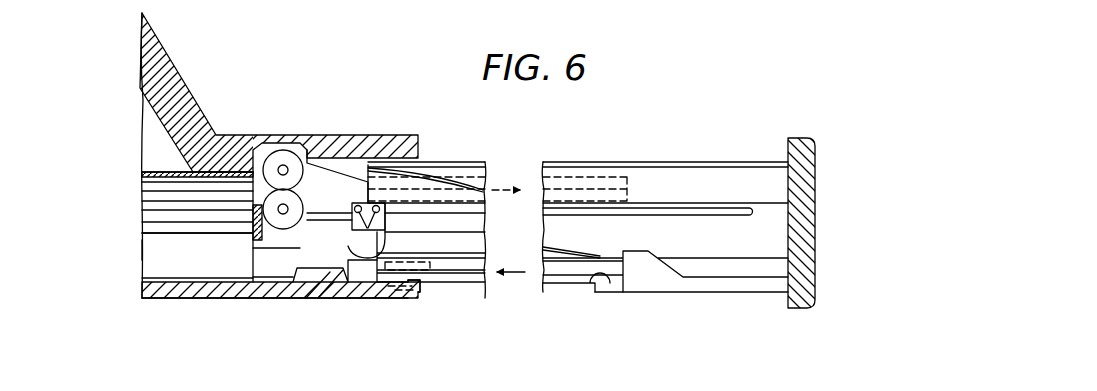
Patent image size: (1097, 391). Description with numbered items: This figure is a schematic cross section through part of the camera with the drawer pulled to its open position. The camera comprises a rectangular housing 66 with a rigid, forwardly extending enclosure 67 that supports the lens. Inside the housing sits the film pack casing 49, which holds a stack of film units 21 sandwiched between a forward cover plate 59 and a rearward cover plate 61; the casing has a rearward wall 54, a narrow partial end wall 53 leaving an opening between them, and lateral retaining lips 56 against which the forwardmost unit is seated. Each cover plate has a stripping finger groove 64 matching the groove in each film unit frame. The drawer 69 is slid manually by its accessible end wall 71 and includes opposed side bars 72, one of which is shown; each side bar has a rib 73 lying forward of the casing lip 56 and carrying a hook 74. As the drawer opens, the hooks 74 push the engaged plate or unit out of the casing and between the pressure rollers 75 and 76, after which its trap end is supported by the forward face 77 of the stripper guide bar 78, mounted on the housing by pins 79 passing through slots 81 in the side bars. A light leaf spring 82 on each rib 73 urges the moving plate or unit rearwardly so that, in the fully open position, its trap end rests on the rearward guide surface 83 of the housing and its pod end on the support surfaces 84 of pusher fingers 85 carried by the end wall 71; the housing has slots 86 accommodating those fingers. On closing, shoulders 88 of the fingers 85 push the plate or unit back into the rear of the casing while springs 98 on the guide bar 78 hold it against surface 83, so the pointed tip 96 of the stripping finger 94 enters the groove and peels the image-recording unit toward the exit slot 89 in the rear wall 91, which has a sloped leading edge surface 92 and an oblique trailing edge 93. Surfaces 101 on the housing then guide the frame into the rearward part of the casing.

The film unit 21 is at (142, 191).
The film pack casing 49 is at (140, 245).
The partial end wall 53 is at (262, 230).
The rearward wall 54 is at (153, 276).
The lateral retaining lip 56 is at (163, 170).
The forward cover plate 59 is at (630, 195).
The rearward cover plate 61 is at (148, 230).
The stripping finger groove 64 is at (428, 265).
The housing 66 is at (245, 133).
The enclosure 67 is at (188, 84).
The drawer 69 is at (794, 136).
The end wall 71 is at (817, 168).
The side bar 72 is at (484, 265).
The rib 73 is at (445, 160).
The hook 74 is at (357, 170).
The pressure roller 75 is at (285, 160).
The pressure roller 76 is at (296, 200).
The forward face 77 is at (360, 203).
The stripper guide bar 78 is at (352, 222).
The pin 79 is at (366, 230).
The slot 81 is at (752, 234).
The leaf spring 82 is at (468, 176).
The rearward guide surface 83 is at (420, 288).
The support surface 84 is at (588, 296).
The pusher finger 85 is at (738, 298).
The slot 86 is at (404, 293).
The shoulder 88 is at (622, 258).
The exit slot 89 is at (332, 300).
The rear wall 91 is at (192, 297).
The leading edge surface 92 is at (352, 300).
The trailing edge 93 is at (278, 298).
The stripping finger 94 is at (306, 290).
The pointed tip 96 is at (332, 266).
The spring 98 is at (394, 248).
The surface 101 is at (255, 275).